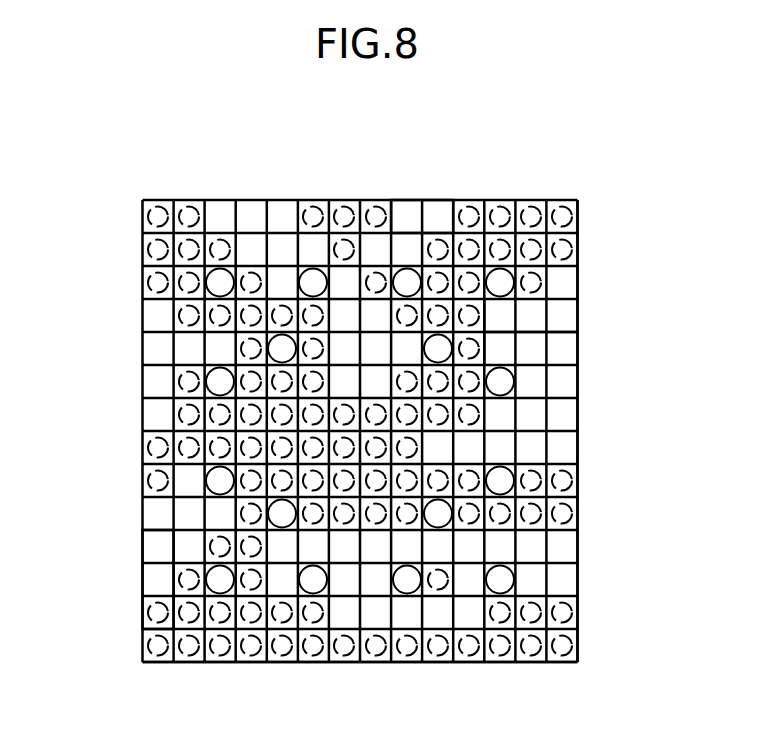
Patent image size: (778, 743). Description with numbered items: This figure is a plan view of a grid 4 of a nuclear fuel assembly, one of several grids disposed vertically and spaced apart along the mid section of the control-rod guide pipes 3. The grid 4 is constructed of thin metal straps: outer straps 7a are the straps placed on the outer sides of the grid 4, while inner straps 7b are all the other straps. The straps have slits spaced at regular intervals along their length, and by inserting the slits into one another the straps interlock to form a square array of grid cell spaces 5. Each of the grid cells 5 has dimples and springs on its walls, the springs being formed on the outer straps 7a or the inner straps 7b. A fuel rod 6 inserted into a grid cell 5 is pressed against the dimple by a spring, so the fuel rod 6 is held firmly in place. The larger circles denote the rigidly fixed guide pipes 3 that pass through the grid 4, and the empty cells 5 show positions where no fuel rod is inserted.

The control-rod guide pipe 3 is at (514, 372).
The grid 4 is at (588, 253).
The grid cell space 5 is at (455, 202).
The fuel rod 6 is at (557, 202).
The outer strap 7a is at (578, 545).
The inner strap 7b is at (520, 335).